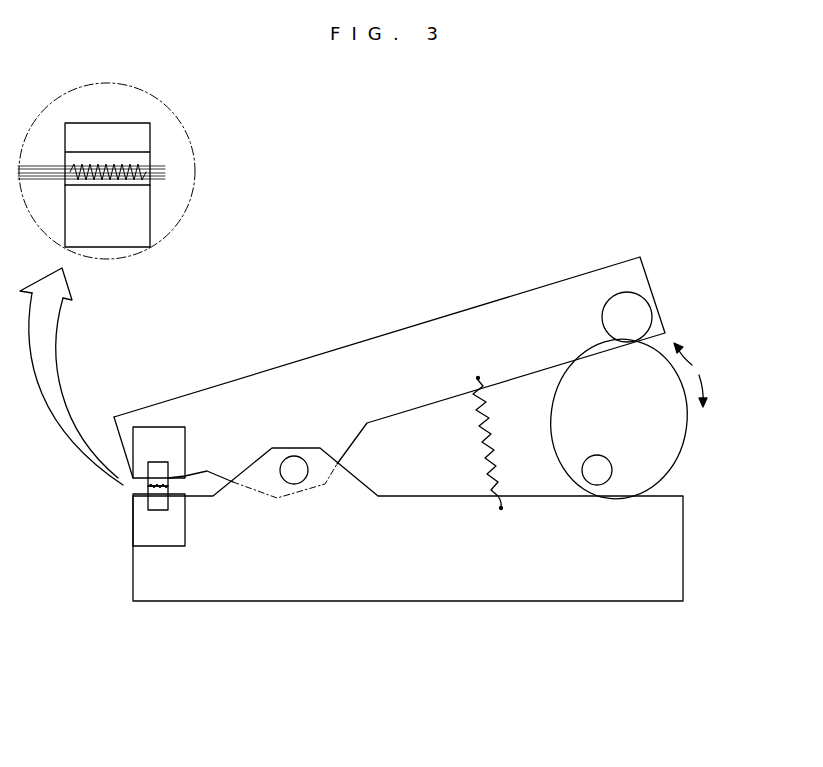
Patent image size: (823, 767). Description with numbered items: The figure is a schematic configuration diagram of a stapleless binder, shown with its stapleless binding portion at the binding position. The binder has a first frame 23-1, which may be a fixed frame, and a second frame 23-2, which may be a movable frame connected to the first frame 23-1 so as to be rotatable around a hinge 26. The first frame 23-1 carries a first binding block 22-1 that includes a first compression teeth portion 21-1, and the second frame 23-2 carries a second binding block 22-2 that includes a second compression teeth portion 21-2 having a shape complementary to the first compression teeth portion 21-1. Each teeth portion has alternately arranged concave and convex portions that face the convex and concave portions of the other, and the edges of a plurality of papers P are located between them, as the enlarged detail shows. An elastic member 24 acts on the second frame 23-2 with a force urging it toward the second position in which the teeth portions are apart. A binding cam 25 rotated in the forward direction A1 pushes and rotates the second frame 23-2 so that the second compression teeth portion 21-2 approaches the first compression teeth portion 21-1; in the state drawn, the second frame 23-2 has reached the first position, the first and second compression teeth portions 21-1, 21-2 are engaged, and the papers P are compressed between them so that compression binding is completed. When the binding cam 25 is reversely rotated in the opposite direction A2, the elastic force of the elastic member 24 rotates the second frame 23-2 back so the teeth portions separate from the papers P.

The first compression teeth portion 21-1 is at (160, 506).
The second compression teeth portion 21-2 is at (160, 467).
The first binding block 22-1 is at (145, 527).
The second binding block 22-2 is at (150, 437).
The first frame 23-1 is at (407, 618).
The second frame 23-2 is at (407, 303).
The elastic member 24 is at (490, 440).
The binding cam 25 is at (693, 428).
The hinge 26 is at (294, 456).
The forward direction A1 is at (690, 360).
The opposite direction A2 is at (703, 388).
The papers P is at (47, 165).